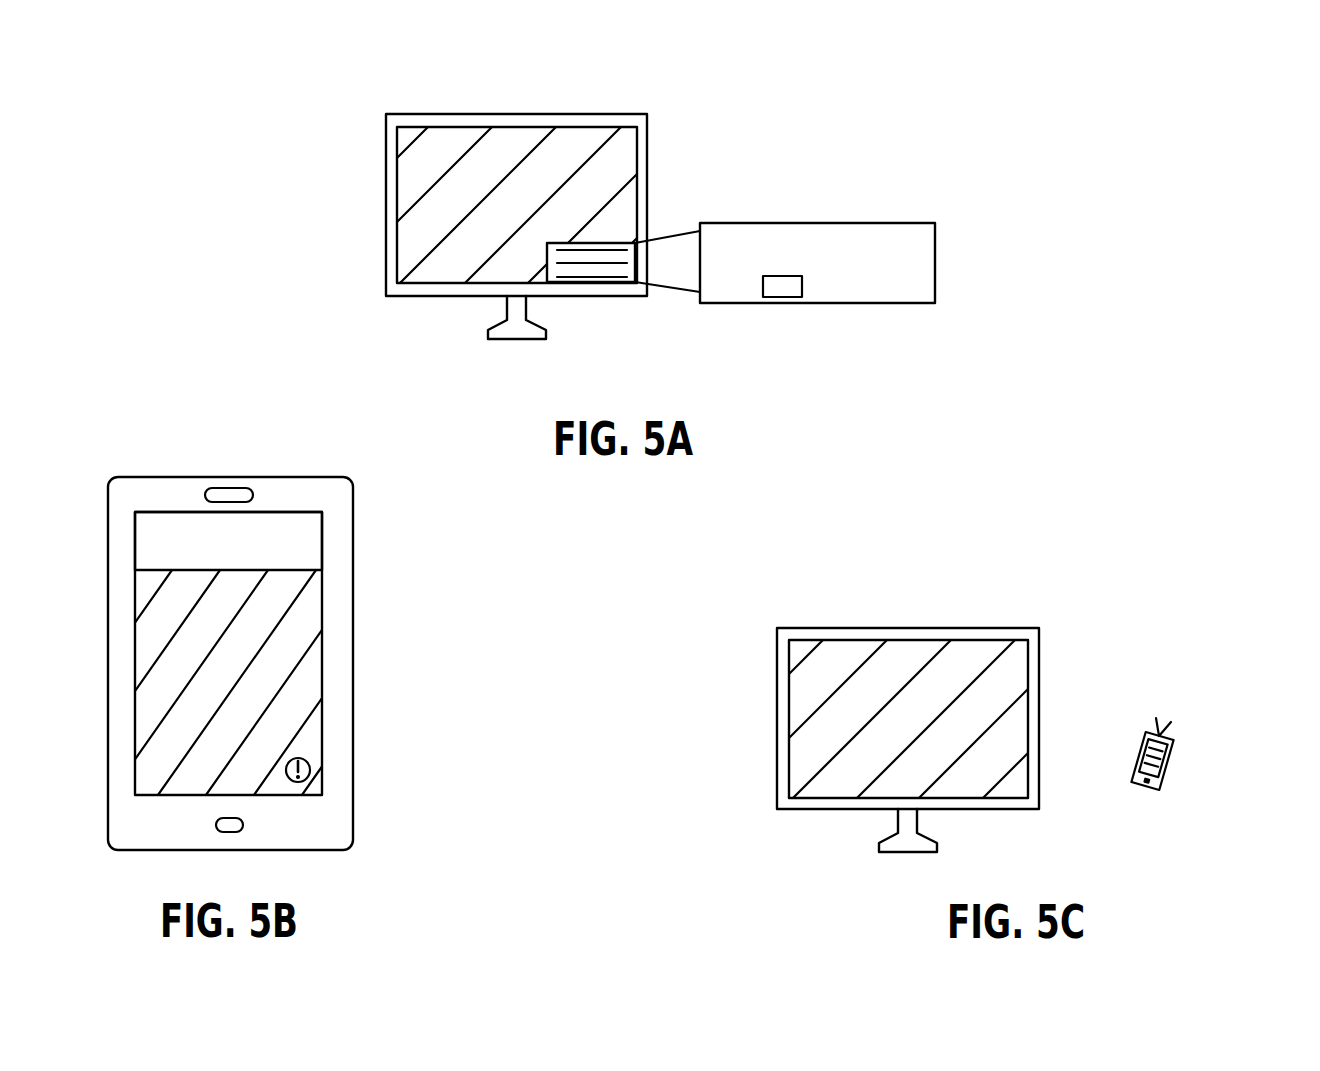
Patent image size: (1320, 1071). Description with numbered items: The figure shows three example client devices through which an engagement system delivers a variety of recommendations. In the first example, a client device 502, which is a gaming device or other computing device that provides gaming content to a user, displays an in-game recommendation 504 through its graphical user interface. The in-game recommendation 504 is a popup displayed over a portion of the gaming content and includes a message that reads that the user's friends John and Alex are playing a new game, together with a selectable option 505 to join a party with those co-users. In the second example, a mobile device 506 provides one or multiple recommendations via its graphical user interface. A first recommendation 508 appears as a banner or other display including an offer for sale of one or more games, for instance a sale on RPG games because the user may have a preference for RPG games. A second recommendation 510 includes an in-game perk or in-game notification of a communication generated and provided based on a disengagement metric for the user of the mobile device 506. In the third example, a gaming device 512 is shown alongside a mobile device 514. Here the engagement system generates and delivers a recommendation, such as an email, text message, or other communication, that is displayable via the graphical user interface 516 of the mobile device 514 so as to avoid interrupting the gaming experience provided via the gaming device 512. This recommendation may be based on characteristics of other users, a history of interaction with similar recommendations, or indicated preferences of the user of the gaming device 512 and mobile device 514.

In FIG. 5A, the client device 502 is at (400, 80).
In FIG. 5A, the in-game recommendation 504 is at (773, 222).
In FIG. 5A, the selectable option 505 is at (787, 303).
In FIG. 5B, the mobile device 506 is at (122, 422).
In FIG. 5B, the first recommendation 508 is at (323, 545).
In FIG. 5B, the second recommendation 510 is at (310, 768).
In FIG. 5C, the gaming device 512 is at (833, 593).
In FIG. 5C, the mobile device 514 is at (1134, 703).
In FIG. 5C, the graphical user interface 516 is at (1164, 757).